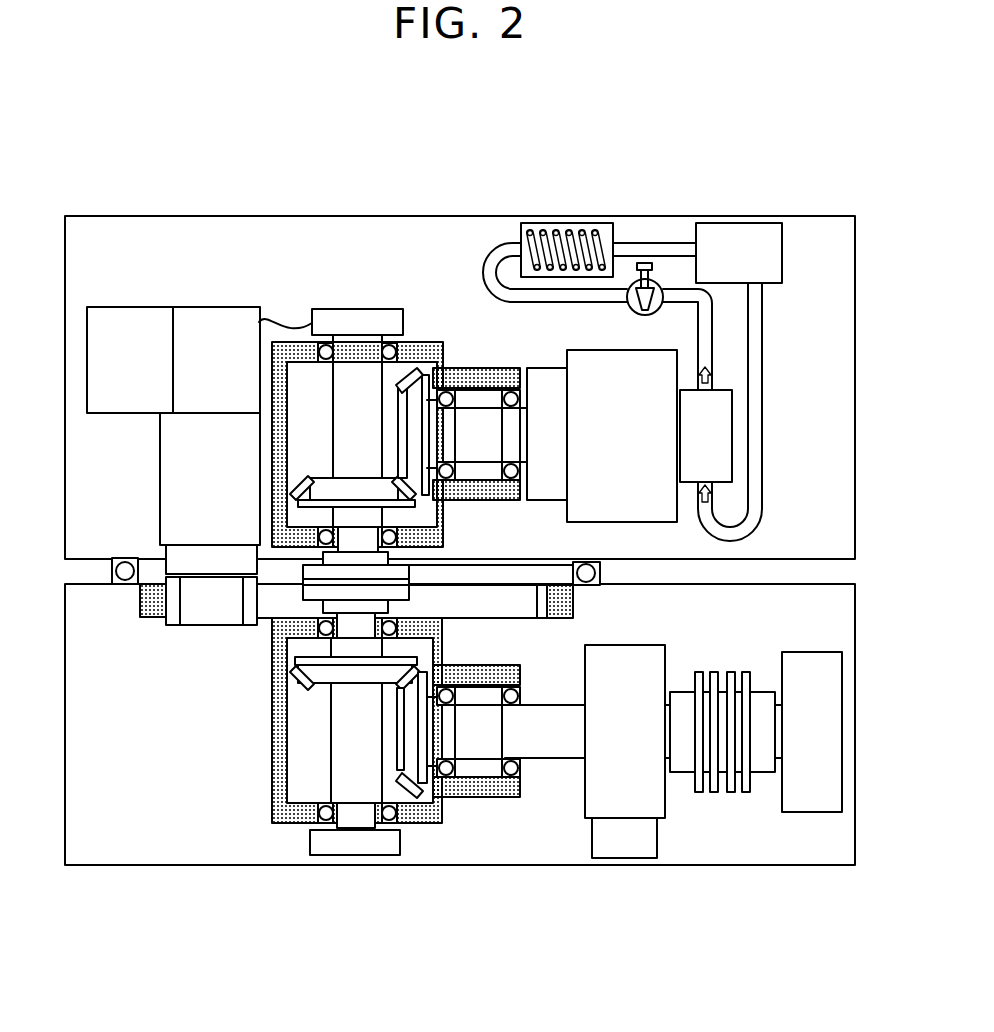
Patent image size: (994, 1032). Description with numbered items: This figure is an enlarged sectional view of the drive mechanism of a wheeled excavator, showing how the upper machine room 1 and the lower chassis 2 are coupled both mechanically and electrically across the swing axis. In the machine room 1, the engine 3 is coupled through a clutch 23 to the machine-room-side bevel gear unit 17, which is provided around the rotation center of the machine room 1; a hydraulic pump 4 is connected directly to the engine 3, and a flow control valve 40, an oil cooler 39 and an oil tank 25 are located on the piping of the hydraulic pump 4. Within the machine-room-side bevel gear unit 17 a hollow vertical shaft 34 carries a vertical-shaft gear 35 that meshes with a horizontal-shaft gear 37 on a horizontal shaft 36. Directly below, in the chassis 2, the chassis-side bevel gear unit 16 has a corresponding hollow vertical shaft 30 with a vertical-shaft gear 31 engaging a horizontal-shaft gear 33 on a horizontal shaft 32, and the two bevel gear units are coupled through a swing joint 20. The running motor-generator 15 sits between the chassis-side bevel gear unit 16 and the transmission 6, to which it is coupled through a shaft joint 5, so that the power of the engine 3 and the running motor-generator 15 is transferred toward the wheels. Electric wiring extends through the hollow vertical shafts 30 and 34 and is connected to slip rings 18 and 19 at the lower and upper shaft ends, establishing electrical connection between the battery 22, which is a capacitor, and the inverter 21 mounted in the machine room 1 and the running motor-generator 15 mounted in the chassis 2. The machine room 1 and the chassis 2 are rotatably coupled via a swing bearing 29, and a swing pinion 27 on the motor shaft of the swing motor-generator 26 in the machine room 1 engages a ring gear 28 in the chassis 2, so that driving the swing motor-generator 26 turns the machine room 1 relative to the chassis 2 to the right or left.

The machine room 1 is at (78, 216).
The chassis 2 is at (810, 853).
The engine 3 is at (608, 372).
The hydraulic pump 4 is at (715, 428).
The shaft joint 5 is at (687, 768).
The transmission 6 is at (783, 777).
The running motor-generator 15 is at (587, 788).
The chassis-side bevel gear unit 16 is at (592, 842).
The machine-room-side bevel gear unit 17 is at (463, 370).
The slip ring 18 is at (358, 843).
The slip ring 19 is at (385, 310).
The swing joint 20 is at (303, 590).
The inverter 21 is at (243, 320).
The battery 22 is at (130, 318).
The clutch 23 is at (538, 385).
The oil tank 25 is at (740, 233).
The swing motor-generator 26 is at (200, 440).
The swing pinion 27 is at (218, 607).
The ring gear 28 is at (150, 613).
The swing bearing 29 is at (118, 585).
The vertical shaft 30 is at (350, 817).
The vertical-shaft gear 31 is at (303, 688).
The horizontal shaft 32 is at (480, 750).
The horizontal-shaft gear 33 is at (403, 783).
The vertical shaft 34 is at (360, 372).
The vertical-shaft gear 35 is at (343, 490).
The horizontal shaft 36 is at (483, 415).
The horizontal-shaft gear 37 is at (415, 377).
The oil cooler 39 is at (607, 232).
The flow control valve 40 is at (650, 263).